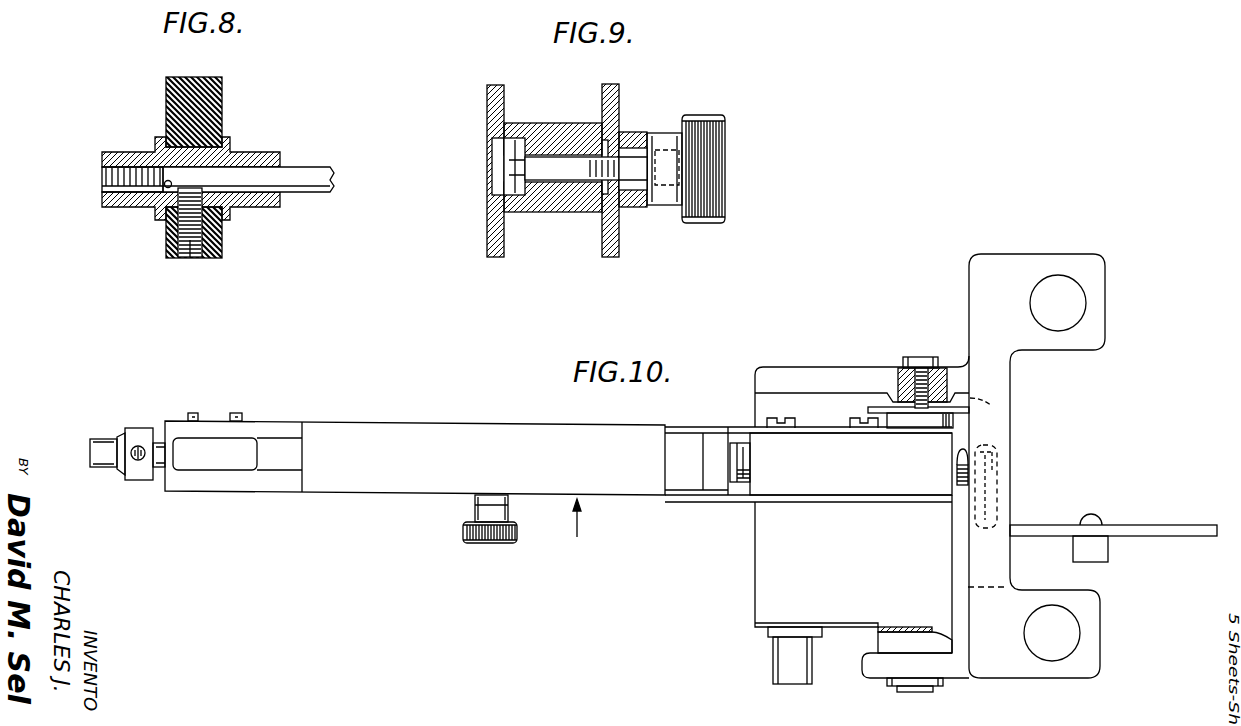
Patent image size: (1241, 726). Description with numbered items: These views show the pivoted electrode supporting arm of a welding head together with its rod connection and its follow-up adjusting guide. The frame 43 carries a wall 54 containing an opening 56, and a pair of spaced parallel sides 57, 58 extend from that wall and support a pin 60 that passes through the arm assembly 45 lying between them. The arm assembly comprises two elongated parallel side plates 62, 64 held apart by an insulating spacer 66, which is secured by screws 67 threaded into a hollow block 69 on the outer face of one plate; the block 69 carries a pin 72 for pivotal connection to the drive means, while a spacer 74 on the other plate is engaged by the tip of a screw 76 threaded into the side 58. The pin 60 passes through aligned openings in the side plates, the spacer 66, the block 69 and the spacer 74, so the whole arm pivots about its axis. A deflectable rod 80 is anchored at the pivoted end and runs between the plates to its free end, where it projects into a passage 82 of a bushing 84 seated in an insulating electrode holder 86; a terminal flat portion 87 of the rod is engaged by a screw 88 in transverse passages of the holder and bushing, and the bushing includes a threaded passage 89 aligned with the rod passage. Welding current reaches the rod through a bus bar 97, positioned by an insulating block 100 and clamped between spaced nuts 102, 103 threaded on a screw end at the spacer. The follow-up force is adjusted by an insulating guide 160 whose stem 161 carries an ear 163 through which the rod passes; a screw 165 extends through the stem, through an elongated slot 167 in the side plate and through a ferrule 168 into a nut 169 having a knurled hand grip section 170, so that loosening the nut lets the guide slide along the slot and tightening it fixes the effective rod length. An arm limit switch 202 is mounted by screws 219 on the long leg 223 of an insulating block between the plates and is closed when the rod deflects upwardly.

In FIG. 10, the frame 43 is at (1065, 670).
In FIG. 10, the arm assembly 45 is at (576, 527).
In FIG. 10, the wall 54 is at (1008, 501).
In FIG. 10, the opening 56 is at (995, 404).
In FIG. 10, the side 57 is at (872, 665).
In FIG. 10, the side 58 is at (790, 376).
In FIG. 10, the pin 60 is at (922, 356).
In FIG. 9, the side plate 62 is at (612, 250).
In FIG. 10, the side plate 62 is at (705, 494).
In FIG. 9, the side plate 64 is at (492, 244).
In FIG. 10, the side plate 64 is at (707, 432).
In FIG. 10, the insulating spacer 66 is at (893, 482).
In FIG. 10, the screws 67 is at (850, 424).
In FIG. 10, the hollow block 69 is at (760, 572).
In FIG. 10, the pin 72 is at (795, 686).
In FIG. 10, the spacer 74 is at (912, 420).
In FIG. 10, the screw 76 is at (900, 378).
In FIG. 8, the deflectable rod 80 is at (305, 183).
In FIG. 8, the passage 82 is at (228, 190).
In FIG. 8, the bushing 84 is at (262, 157).
In FIG. 10, the bushing 84 is at (110, 442).
In FIG. 8, the insulating electrode holder 86 is at (223, 100).
In FIG. 10, the insulating electrode holder 86 is at (136, 426).
In FIG. 8, the terminal flat portion 87 is at (164, 187).
In FIG. 8, the screw 88 is at (180, 258).
In FIG. 10, the screw 88 is at (138, 461).
In FIG. 8, the threaded passage 89 is at (108, 176).
In FIG. 10, the bus bar 97 is at (1170, 526).
In FIG. 10, the insulating block 100 is at (1100, 558).
In FIG. 10, the nut 102 is at (956, 478).
In FIG. 10, the nut 103 is at (998, 456).
In FIG. 9, the insulating guide 160 is at (558, 122).
In FIG. 9, the stem 161 is at (536, 214).
In FIG. 10, the ear 163 is at (714, 456).
In FIG. 9, the screw 165 is at (510, 178).
In FIG. 9, the elongated slot 167 is at (493, 140).
In FIG. 9, the ferrule 168 is at (633, 132).
In FIG. 9, the nut 169 is at (668, 206).
In FIG. 9, the knurled hand grip section 170 is at (712, 177).
In FIG. 10, the knurled hand grip section 170 is at (462, 536).
In FIG. 10, the arm limit switch 202 is at (218, 466).
In FIG. 10, the screws 219 is at (236, 413).
In FIG. 10, the long leg 223 is at (467, 424).